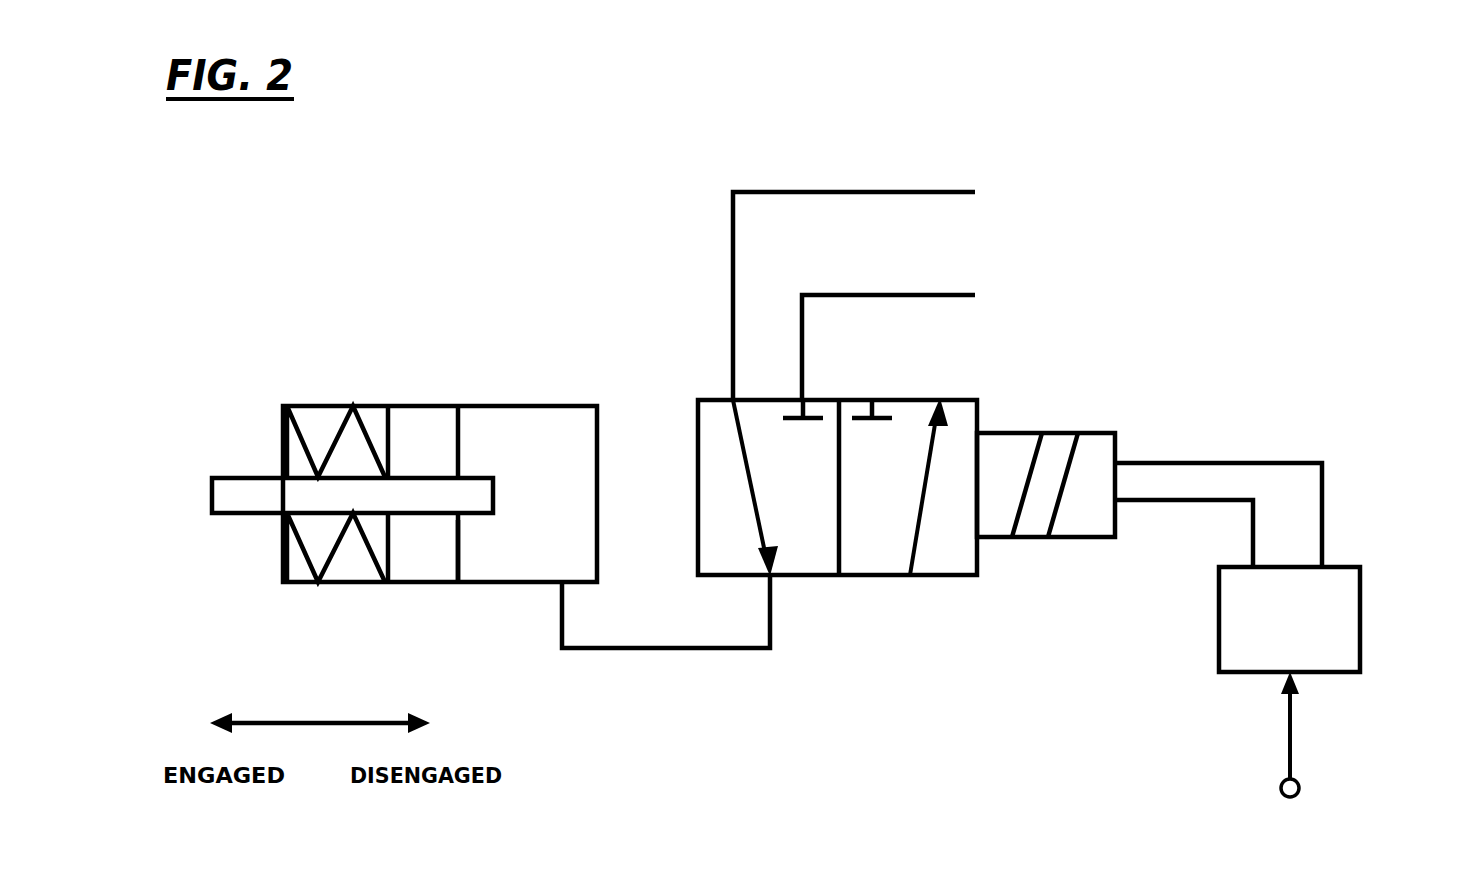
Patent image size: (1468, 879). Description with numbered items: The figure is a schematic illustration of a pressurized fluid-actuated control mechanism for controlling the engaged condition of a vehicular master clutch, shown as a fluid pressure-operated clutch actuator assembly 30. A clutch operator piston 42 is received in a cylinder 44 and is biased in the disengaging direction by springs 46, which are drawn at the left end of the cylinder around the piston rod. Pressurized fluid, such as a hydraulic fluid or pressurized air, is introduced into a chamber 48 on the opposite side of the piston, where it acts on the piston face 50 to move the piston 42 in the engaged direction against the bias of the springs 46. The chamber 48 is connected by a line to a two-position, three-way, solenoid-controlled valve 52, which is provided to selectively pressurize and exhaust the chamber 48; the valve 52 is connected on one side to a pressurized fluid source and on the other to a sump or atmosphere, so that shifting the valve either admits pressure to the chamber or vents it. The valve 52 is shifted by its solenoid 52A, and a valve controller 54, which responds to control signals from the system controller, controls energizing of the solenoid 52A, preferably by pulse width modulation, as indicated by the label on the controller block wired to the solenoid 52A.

The clutch actuator assembly 30 is at (1320, 170).
The clutch operator piston 42 is at (423, 478).
The cylinder 44 is at (526, 406).
The springs 46 is at (318, 443).
The chamber 48 is at (562, 477).
The piston face 50 is at (462, 547).
The solenoid-controlled valve 52 is at (838, 606).
The solenoid 52A is at (1011, 470).
The valve controller 54 is at (1323, 638).